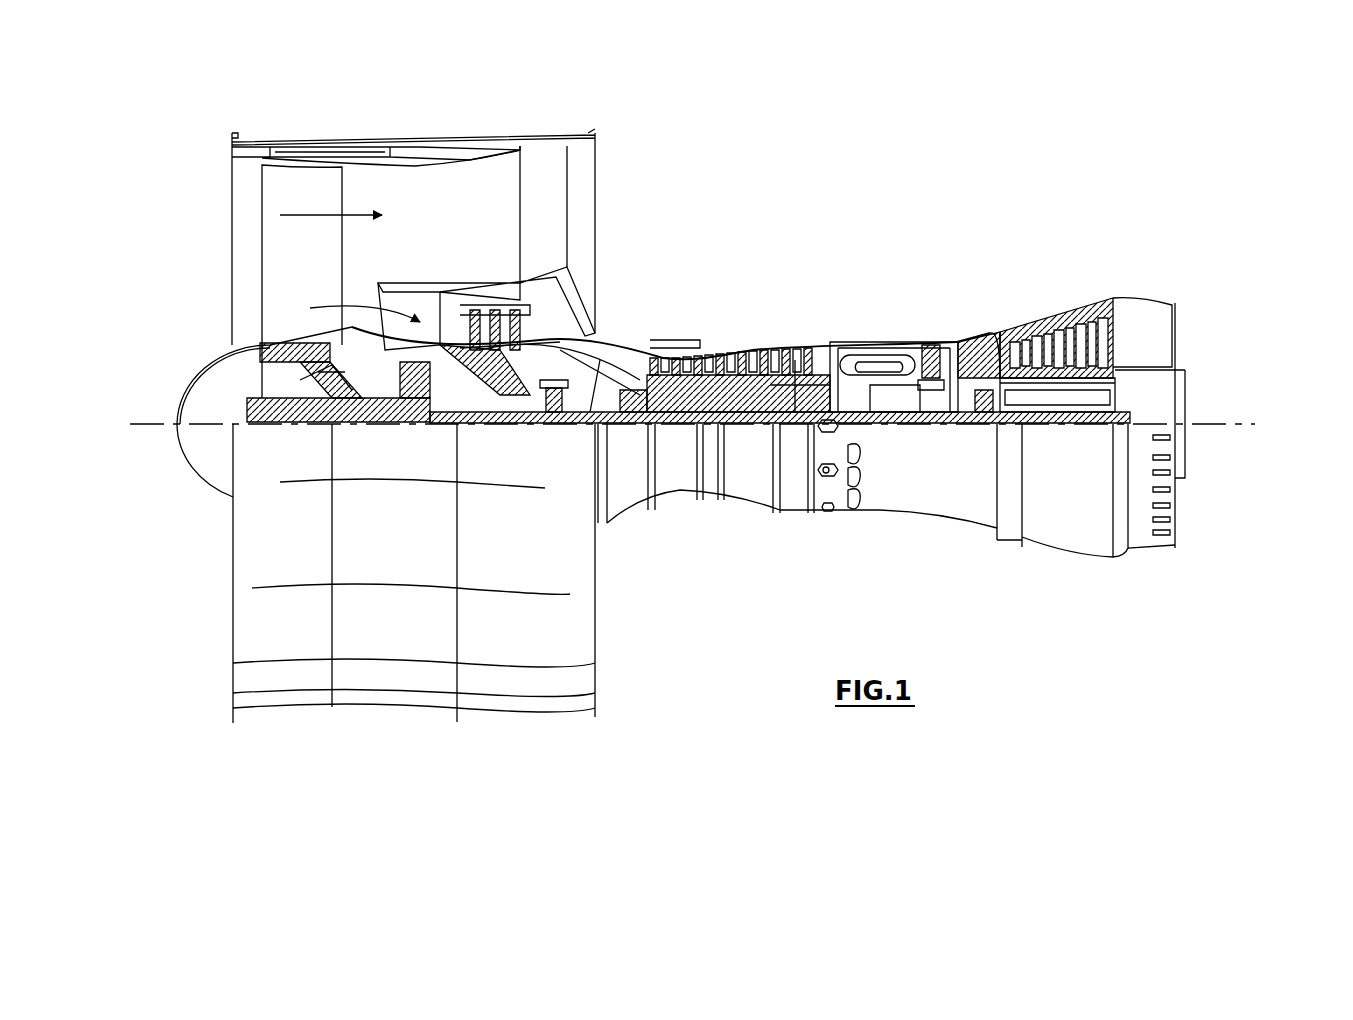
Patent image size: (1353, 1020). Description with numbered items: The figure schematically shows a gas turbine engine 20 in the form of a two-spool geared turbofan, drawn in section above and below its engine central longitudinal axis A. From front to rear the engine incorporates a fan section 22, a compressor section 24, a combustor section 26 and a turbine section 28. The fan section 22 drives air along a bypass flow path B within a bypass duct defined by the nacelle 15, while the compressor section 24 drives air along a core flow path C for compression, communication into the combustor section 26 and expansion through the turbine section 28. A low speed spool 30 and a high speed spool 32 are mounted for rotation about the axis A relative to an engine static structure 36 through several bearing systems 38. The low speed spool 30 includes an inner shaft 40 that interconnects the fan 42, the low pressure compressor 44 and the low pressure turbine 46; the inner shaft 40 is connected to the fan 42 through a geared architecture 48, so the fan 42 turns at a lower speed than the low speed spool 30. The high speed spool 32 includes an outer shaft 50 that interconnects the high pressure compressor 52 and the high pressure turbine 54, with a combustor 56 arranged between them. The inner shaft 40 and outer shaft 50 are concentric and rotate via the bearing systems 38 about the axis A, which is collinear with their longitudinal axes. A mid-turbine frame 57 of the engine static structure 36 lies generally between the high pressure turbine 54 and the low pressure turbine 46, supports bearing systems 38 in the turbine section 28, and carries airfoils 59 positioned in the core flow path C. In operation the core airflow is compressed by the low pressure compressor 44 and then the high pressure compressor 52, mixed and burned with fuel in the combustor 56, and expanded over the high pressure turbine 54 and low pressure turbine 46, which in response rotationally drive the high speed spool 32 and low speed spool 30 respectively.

The gas turbine engine 20 is at (875, 188).
The fan section 22 is at (342, 132).
The nacelle 15 is at (415, 150).
The fan 42 is at (316, 266).
The bypass flow path B is at (318, 215).
The core flow path C is at (352, 306).
The low pressure compressor 44 is at (530, 335).
The compressor section 24 is at (647, 330).
The high pressure compressor 52 is at (723, 350).
The high speed spool 32 is at (795, 390).
The combustor section 26 is at (865, 318).
The combustor 56 is at (875, 365).
The high pressure turbine 54 is at (930, 345).
The mid-turbine frame 57 is at (976, 333).
The turbine section 28 is at (1013, 283).
The low pressure turbine 46 is at (1060, 305).
The airfoils 59 is at (1005, 390).
The geared architecture 48 is at (420, 400).
The bearing systems 38 is at (552, 405).
The outer shaft 50 is at (878, 415).
The inner shaft 40 is at (612, 428).
The low speed spool 30 is at (752, 428).
The engine static structure 36 is at (792, 513).
The engine central longitudinal axis A is at (1255, 424).